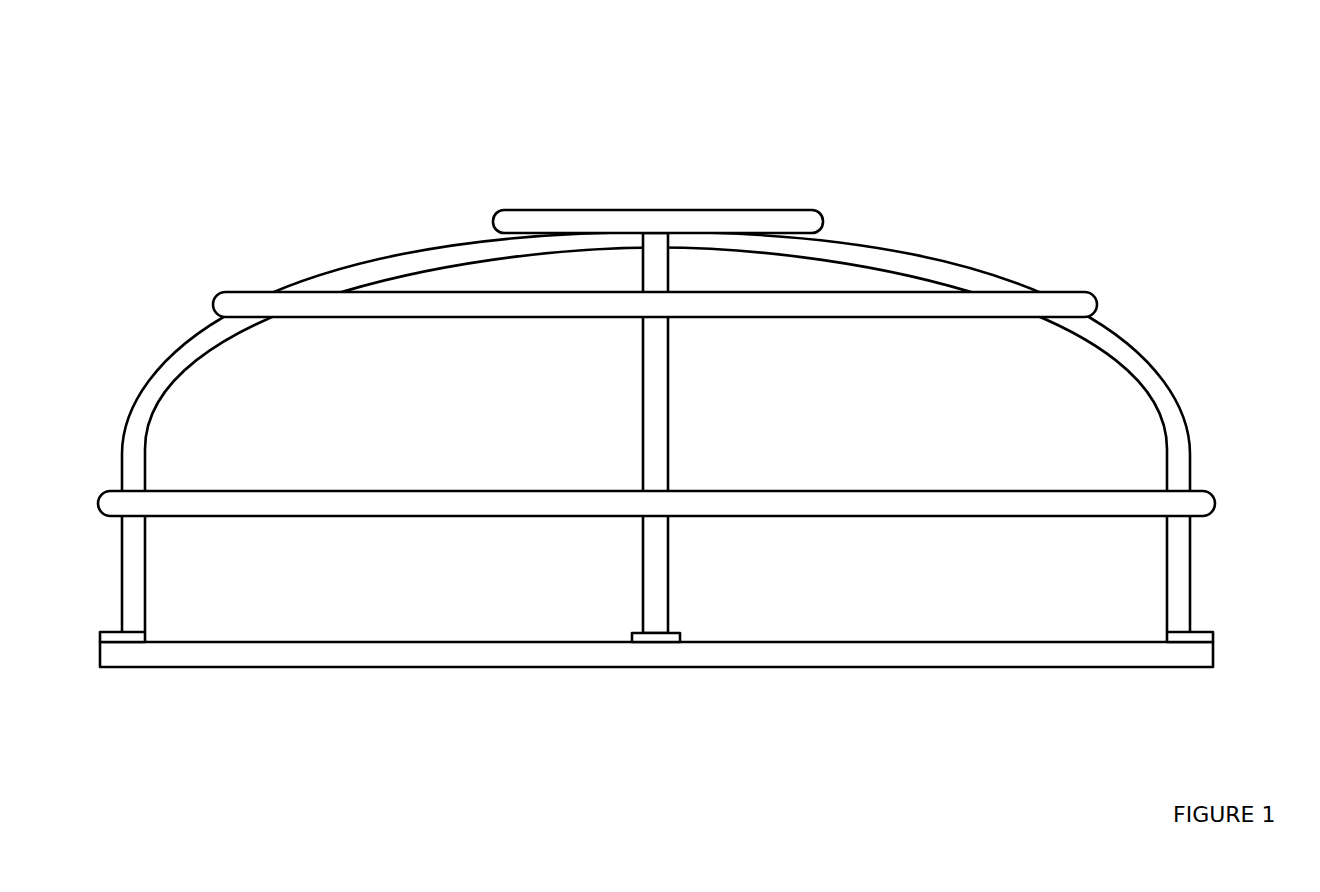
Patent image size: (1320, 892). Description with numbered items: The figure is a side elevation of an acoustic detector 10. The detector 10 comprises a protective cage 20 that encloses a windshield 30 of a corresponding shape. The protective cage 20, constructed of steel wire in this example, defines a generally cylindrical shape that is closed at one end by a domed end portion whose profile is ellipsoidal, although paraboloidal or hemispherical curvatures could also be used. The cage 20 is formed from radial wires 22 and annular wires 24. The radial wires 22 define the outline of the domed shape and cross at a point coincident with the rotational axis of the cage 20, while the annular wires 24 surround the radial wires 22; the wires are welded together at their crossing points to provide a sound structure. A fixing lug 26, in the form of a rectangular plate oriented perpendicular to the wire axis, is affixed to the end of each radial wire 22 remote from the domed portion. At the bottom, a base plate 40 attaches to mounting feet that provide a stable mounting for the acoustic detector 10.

The acoustic detector 10 is at (624, 389).
The protective cage 20 is at (625, 416).
The radial wires 22 is at (625, 420).
The annular wires 24 is at (455, 318).
The fixing lug 26 is at (113, 630).
The windshield 30 is at (250, 387).
The base plate 40 is at (483, 653).